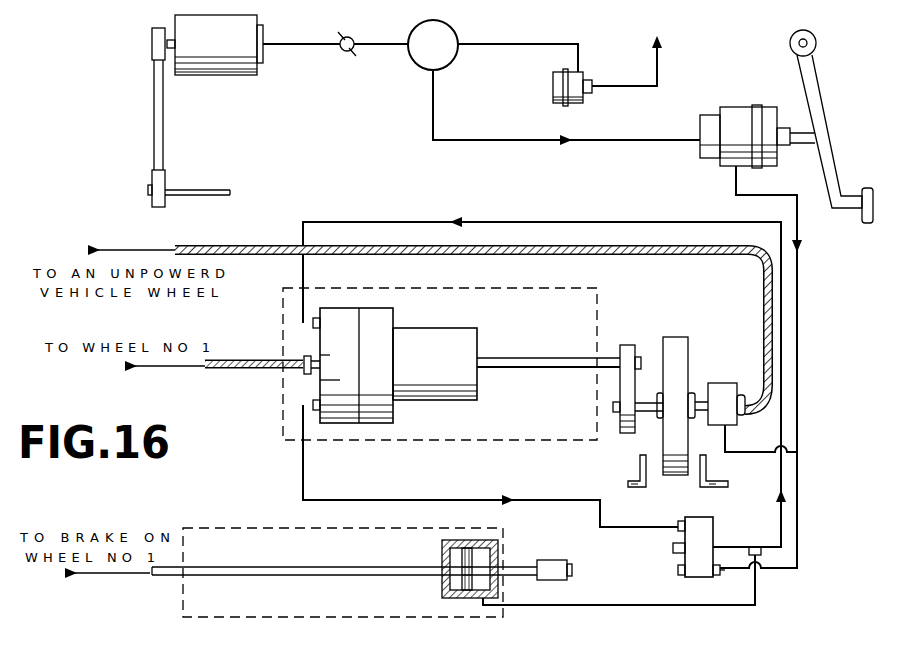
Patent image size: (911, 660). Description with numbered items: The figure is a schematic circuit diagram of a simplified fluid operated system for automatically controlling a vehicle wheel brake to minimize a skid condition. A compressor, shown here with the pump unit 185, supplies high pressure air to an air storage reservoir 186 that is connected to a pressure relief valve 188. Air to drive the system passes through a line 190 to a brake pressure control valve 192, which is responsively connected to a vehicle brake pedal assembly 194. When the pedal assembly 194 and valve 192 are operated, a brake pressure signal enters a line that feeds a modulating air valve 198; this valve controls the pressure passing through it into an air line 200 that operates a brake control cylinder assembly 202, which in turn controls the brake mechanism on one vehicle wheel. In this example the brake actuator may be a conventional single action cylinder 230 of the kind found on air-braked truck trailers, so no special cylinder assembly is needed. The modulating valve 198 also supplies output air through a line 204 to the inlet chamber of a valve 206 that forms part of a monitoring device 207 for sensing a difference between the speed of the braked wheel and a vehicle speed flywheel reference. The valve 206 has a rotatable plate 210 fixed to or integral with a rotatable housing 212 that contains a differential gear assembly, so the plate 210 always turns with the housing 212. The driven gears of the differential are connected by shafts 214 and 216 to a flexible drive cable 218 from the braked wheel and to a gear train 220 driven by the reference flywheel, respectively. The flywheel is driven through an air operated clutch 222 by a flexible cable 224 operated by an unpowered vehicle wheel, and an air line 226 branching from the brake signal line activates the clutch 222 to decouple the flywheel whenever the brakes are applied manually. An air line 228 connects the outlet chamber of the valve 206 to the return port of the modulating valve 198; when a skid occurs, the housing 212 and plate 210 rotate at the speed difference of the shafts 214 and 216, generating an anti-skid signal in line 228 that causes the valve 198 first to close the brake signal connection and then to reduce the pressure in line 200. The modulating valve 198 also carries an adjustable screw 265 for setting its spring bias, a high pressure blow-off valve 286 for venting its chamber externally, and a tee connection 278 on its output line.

The hydraulic pump 185 is at (231, 75).
The air storage reservoir 186 is at (416, 65).
The pressure relief valve 188 is at (553, 87).
The line 190 is at (497, 143).
The brake pressure control valve 192 is at (718, 172).
The vehicle brake pedal assembly 194 is at (822, 100).
The modulating air valve 198 is at (688, 578).
The air line 200 is at (688, 606).
The brake control cylinder assembly 202 is at (256, 528).
The line 204 is at (518, 222).
The valve 206 is at (342, 308).
The monitoring device 207 is at (425, 442).
The rotatable plate 210 is at (390, 316).
The rotatable housing 212 is at (425, 337).
The shaft 214 is at (312, 355).
The shaft 216 is at (566, 360).
The flexible drive cable 218 is at (240, 373).
The gear train 220 is at (624, 434).
The air operated clutch 222 is at (724, 384).
The flexible cable 224 is at (222, 246).
The air line 226 is at (755, 455).
The air line 228 is at (318, 500).
The single action cylinder 230 is at (494, 541).
The adjustable screw 265 is at (673, 548).
The tee connection 278 is at (740, 547).
The high pressure blow-off valve 286 is at (678, 570).